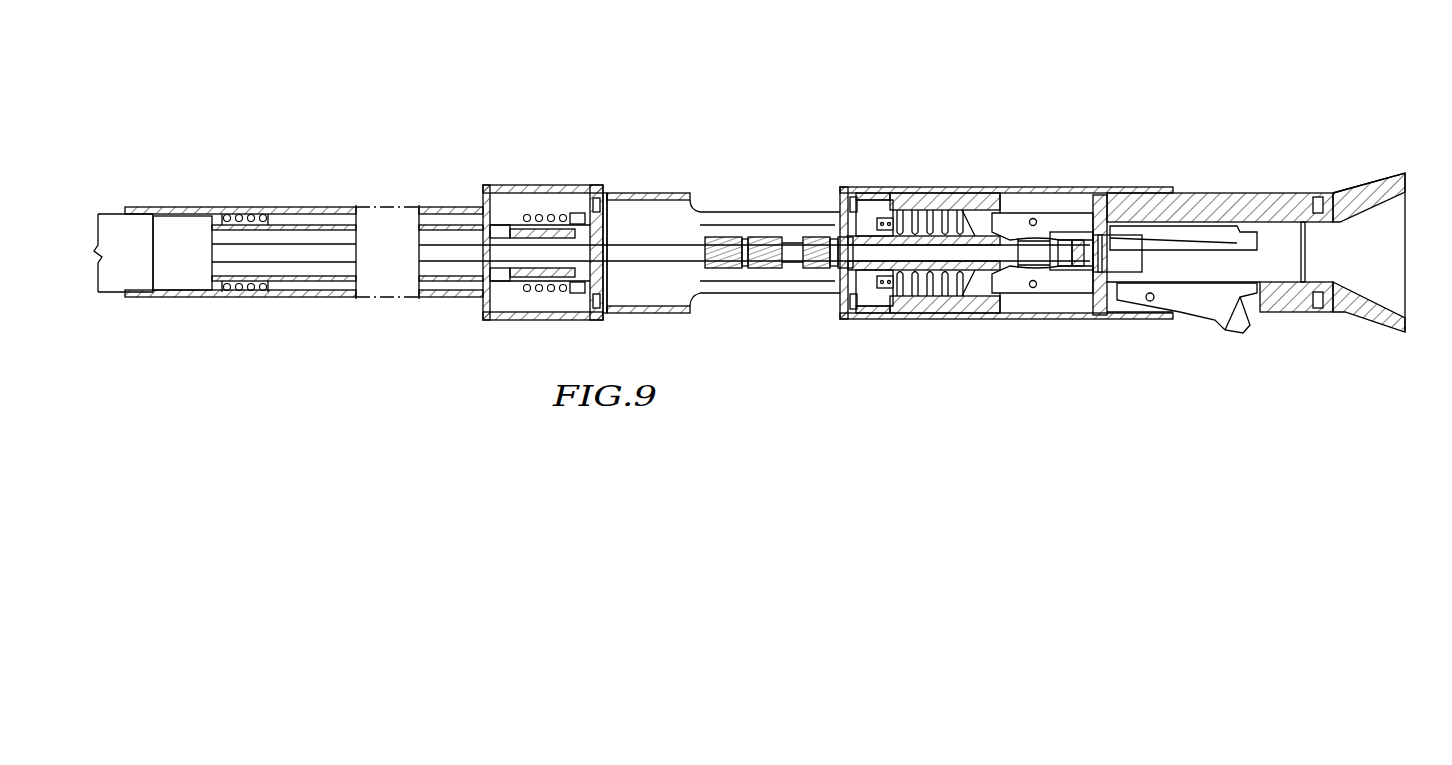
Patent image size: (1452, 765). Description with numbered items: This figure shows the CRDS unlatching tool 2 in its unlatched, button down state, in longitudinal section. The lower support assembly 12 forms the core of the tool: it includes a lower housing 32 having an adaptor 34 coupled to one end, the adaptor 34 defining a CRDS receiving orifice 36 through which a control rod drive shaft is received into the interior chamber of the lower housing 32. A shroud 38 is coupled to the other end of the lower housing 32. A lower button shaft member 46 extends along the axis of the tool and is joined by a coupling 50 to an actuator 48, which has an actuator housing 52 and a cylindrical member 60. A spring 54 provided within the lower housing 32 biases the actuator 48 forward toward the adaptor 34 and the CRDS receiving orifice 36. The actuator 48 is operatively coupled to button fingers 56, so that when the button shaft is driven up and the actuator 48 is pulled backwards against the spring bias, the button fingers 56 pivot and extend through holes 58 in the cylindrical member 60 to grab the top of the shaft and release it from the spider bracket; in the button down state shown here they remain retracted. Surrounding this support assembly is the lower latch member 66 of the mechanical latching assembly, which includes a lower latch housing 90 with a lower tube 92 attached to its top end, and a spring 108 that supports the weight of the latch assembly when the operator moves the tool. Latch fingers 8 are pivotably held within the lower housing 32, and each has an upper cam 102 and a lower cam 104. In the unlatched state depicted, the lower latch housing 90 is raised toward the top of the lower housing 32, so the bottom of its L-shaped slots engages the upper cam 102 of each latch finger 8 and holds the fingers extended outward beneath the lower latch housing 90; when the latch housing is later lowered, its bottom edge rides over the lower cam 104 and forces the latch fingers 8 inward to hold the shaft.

The CRDS unlatching tool 2 is at (768, 116).
The latch fingers 8 is at (1196, 235).
The lower support assembly 12 is at (700, 306).
The lower housing 32 is at (1243, 200).
The adaptor 34 is at (1378, 318).
The CRDS receiving orifice 36 is at (1398, 292).
The shroud 38 is at (652, 191).
The lower button shaft member 46 is at (450, 258).
The actuator 48 is at (924, 263).
The coupling 50 is at (750, 263).
The actuator housing 52 is at (955, 208).
The spring 54 is at (895, 290).
The button fingers 56 is at (1040, 213).
The holes 58 is at (1076, 262).
The cylindrical member 60 is at (1125, 240).
The lower latch member 66 is at (441, 192).
The lower latch housing 90 is at (882, 187).
The lower tube 92 is at (318, 207).
The upper cam 102 is at (1127, 300).
The lower cam 104 is at (1238, 333).
The spring 108 is at (252, 207).